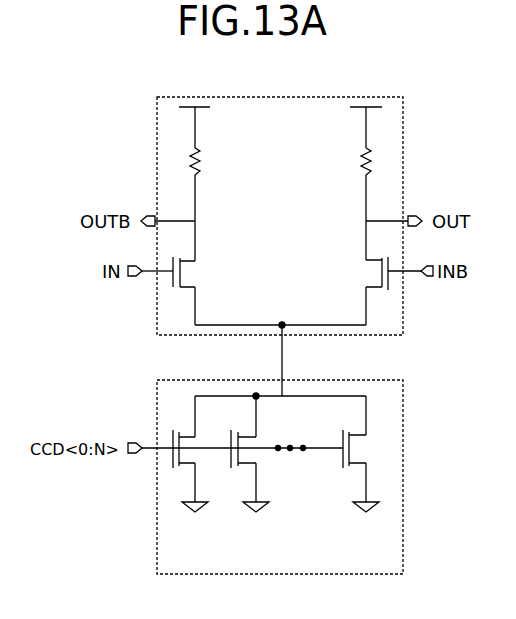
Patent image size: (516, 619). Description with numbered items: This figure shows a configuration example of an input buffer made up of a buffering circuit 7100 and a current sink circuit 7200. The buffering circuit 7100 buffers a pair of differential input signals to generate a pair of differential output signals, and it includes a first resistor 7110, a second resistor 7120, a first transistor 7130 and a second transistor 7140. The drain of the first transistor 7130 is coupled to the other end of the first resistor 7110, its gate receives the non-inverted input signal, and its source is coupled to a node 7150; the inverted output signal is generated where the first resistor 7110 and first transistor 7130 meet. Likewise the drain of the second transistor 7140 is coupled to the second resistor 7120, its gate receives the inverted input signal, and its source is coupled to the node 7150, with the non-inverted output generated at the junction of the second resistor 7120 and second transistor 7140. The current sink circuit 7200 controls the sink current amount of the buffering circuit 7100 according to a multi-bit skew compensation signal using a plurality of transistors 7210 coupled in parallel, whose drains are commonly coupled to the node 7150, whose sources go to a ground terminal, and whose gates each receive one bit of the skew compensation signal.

The buffering circuit 7100 is at (368, 97).
The first resistor 7110 is at (203, 163).
The second resistor 7120 is at (346, 163).
The first transistor 7130 is at (189, 271).
The second transistor 7140 is at (369, 271).
The node 7150 is at (282, 322).
The current sink circuit 7200 is at (387, 368).
The plurality of transistors 7210 is at (188, 452).